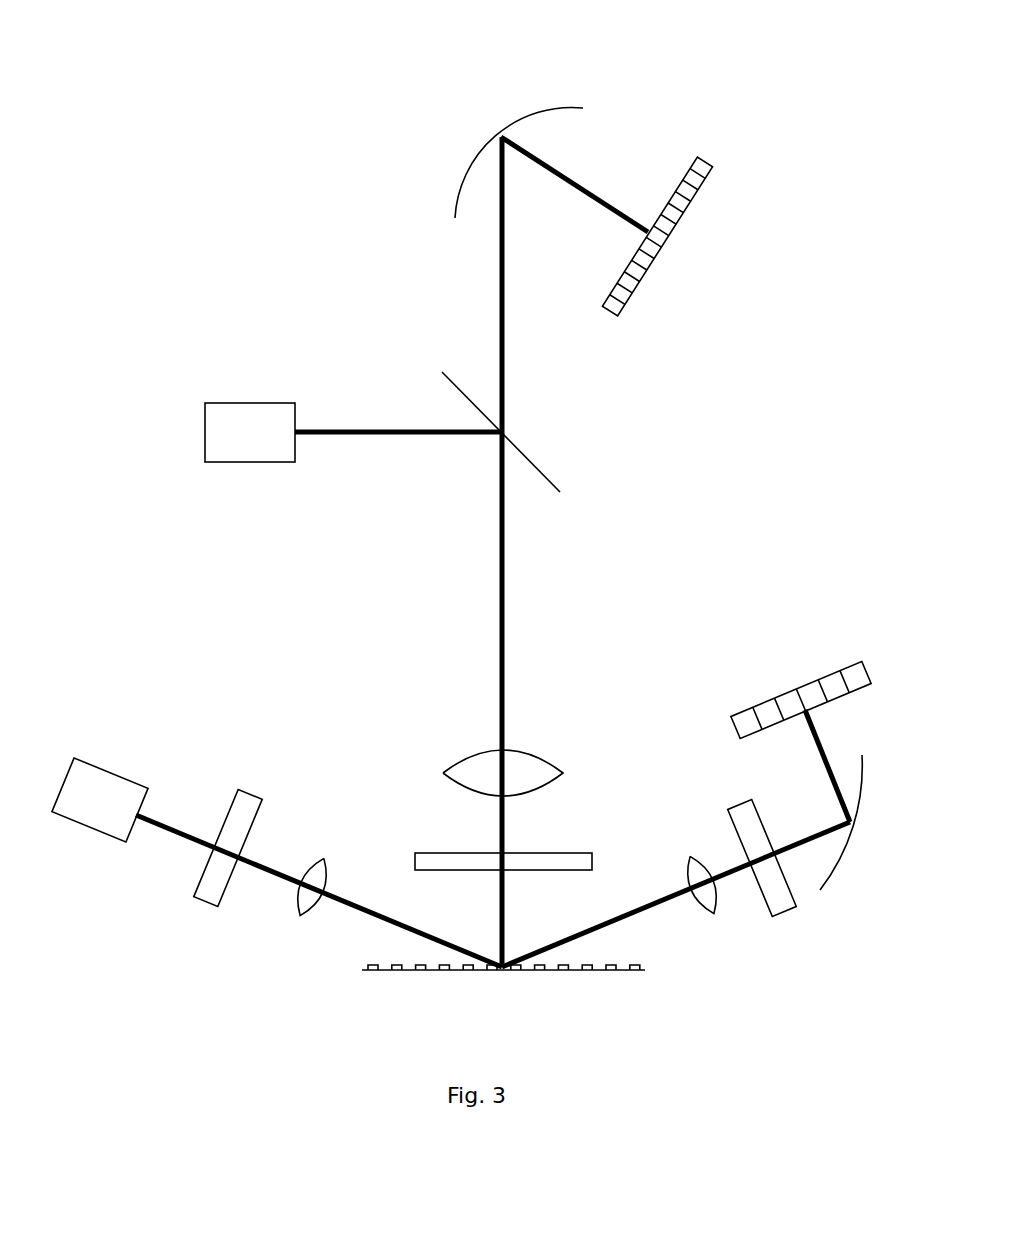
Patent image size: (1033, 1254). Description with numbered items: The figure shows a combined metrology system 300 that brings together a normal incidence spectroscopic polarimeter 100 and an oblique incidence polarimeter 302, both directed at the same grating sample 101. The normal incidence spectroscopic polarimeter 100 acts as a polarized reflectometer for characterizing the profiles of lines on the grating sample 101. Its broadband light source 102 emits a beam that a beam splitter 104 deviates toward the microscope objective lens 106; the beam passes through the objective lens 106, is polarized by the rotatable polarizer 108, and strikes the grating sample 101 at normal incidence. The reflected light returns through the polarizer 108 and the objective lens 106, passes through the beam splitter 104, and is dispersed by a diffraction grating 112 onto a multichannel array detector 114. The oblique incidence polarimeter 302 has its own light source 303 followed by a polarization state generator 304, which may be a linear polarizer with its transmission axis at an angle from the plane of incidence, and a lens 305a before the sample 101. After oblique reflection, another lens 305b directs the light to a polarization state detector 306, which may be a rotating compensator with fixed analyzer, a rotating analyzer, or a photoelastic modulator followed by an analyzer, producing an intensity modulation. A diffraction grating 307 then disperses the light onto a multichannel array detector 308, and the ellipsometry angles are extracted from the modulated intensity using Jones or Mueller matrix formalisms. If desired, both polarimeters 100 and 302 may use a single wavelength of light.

The combined metrology system 300 is at (213, 64).
The normal incidence spectroscopic polarimeter 100 is at (337, 254).
The oblique incidence polarimeter 302 is at (200, 706).
The grating sample 101 is at (630, 970).
The broadband light source 102 is at (227, 462).
The beam splitter 104 is at (548, 475).
The microscope objective lens 106 is at (540, 758).
The polarizer 108 is at (592, 856).
The diffraction grating 112 is at (472, 162).
The multichannel array detector 114 is at (702, 187).
The light source 303 is at (90, 830).
The polarization state generator 304 is at (195, 883).
The lens 305a is at (297, 900).
The lens 305b is at (717, 907).
The polarization state detector 306 is at (783, 910).
The diffraction grating 307 is at (845, 853).
The multichannel array detector 308 is at (760, 705).